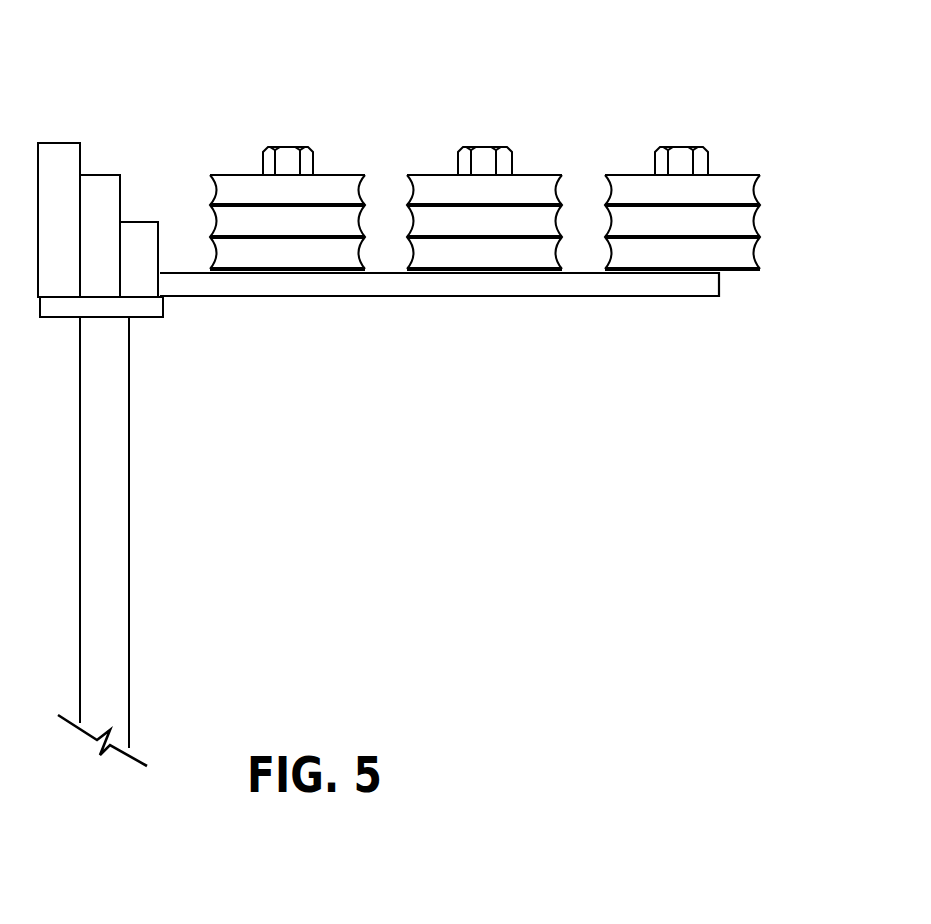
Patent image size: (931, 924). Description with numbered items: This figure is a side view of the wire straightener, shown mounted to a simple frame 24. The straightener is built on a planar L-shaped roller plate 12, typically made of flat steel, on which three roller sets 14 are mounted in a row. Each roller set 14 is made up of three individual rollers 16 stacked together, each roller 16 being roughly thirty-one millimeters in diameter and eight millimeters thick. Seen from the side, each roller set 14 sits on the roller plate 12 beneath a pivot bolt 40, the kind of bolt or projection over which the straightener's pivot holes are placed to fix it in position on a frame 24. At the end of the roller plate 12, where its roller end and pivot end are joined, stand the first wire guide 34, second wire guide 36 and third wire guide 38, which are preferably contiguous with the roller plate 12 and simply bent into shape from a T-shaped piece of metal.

The roller plate 12 is at (372, 296).
The roller set 14 is at (521, 196).
The roller 16 is at (740, 248).
The frame 24 is at (130, 537).
The first wire guide 34 is at (140, 223).
The second wire guide 36 is at (98, 175).
The third wire guide 38 is at (60, 143).
The pivot bolt 40 is at (263, 153).